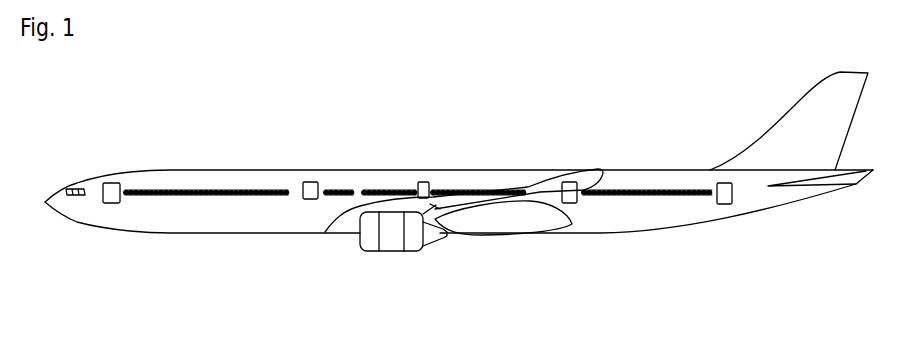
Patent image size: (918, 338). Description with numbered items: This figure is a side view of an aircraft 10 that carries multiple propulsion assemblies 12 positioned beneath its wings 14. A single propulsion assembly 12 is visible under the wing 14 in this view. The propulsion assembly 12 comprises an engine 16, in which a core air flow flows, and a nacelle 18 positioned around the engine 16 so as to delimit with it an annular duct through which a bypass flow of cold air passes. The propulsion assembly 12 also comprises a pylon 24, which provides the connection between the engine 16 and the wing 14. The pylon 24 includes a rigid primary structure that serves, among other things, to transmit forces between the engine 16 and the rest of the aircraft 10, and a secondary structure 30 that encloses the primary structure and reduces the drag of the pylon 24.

The aircraft 10 is at (222, 143).
The propulsion assembly 12 is at (371, 265).
The wing 14 is at (538, 183).
The engine 16 is at (433, 247).
The nacelle 18 is at (393, 254).
The pylon 24 is at (465, 220).
The secondary structure 30 is at (437, 207).